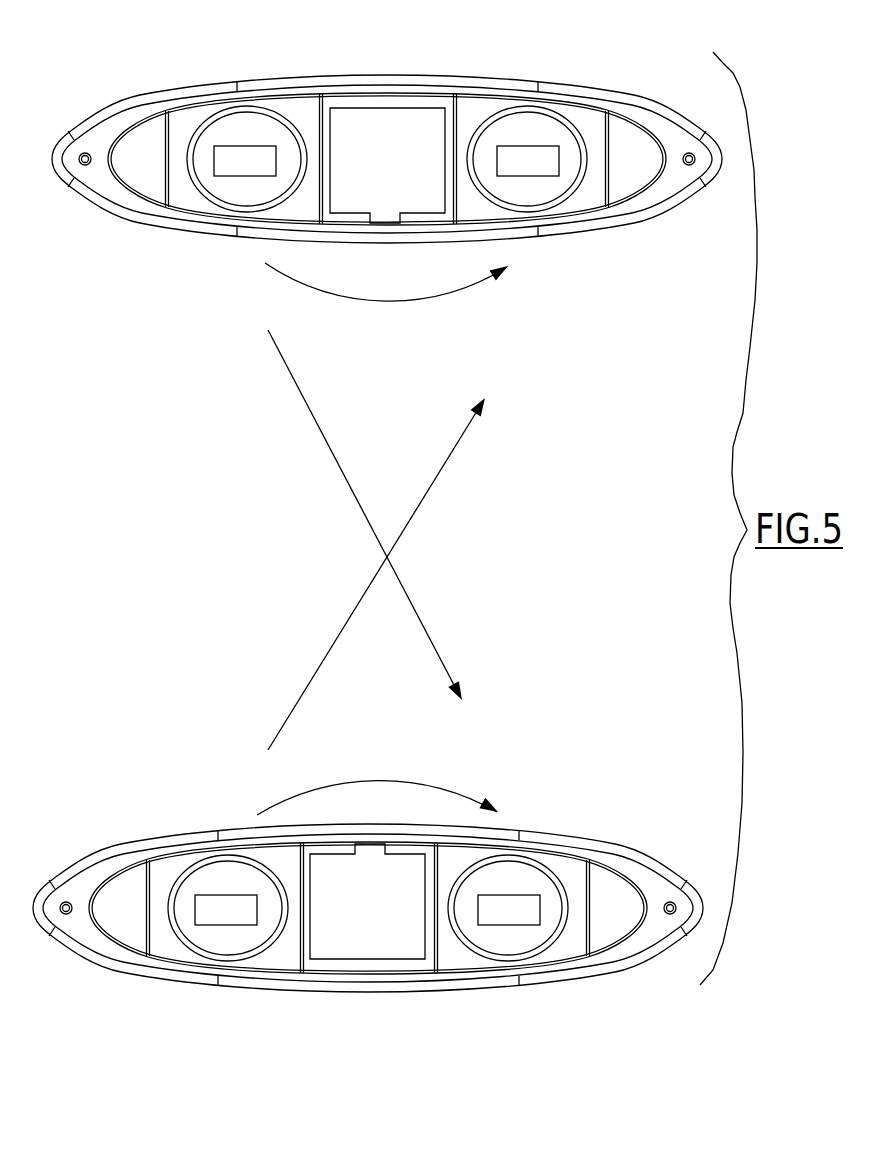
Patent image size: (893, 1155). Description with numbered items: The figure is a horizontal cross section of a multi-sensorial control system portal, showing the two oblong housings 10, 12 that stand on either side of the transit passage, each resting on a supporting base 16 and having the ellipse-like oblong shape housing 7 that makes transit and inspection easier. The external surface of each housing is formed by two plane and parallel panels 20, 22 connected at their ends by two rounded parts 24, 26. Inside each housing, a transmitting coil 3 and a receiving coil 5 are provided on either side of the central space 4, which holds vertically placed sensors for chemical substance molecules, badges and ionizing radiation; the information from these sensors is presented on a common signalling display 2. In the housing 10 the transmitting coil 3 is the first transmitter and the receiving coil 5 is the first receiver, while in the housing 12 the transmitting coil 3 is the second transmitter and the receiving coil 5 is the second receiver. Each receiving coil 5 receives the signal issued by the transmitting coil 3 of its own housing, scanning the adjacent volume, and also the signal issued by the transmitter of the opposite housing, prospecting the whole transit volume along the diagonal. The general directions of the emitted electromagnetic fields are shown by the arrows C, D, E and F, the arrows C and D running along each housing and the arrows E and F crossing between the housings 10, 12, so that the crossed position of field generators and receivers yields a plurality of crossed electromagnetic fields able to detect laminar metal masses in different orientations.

The signalling display 2 is at (137, 167).
The transmitting coil 3 is at (236, 193).
The central space 4 is at (408, 188).
The receiving coil 5 is at (530, 193).
The oblong shape housing 7 is at (663, 184).
The housing 10 is at (642, 71).
The housing 12 is at (559, 1013).
The supporting base 16 is at (98, 170).
The plane panel 20 is at (384, 89).
The plane panel 22 is at (302, 237).
The rounded part 24 is at (118, 132).
The rounded part 26 is at (657, 133).
The emitted electromagnetic field direction C is at (386, 296).
The emitted electromagnetic field direction D is at (377, 786).
The emitted electromagnetic field direction E is at (365, 515).
The emitted electromagnetic field direction F is at (376, 574).